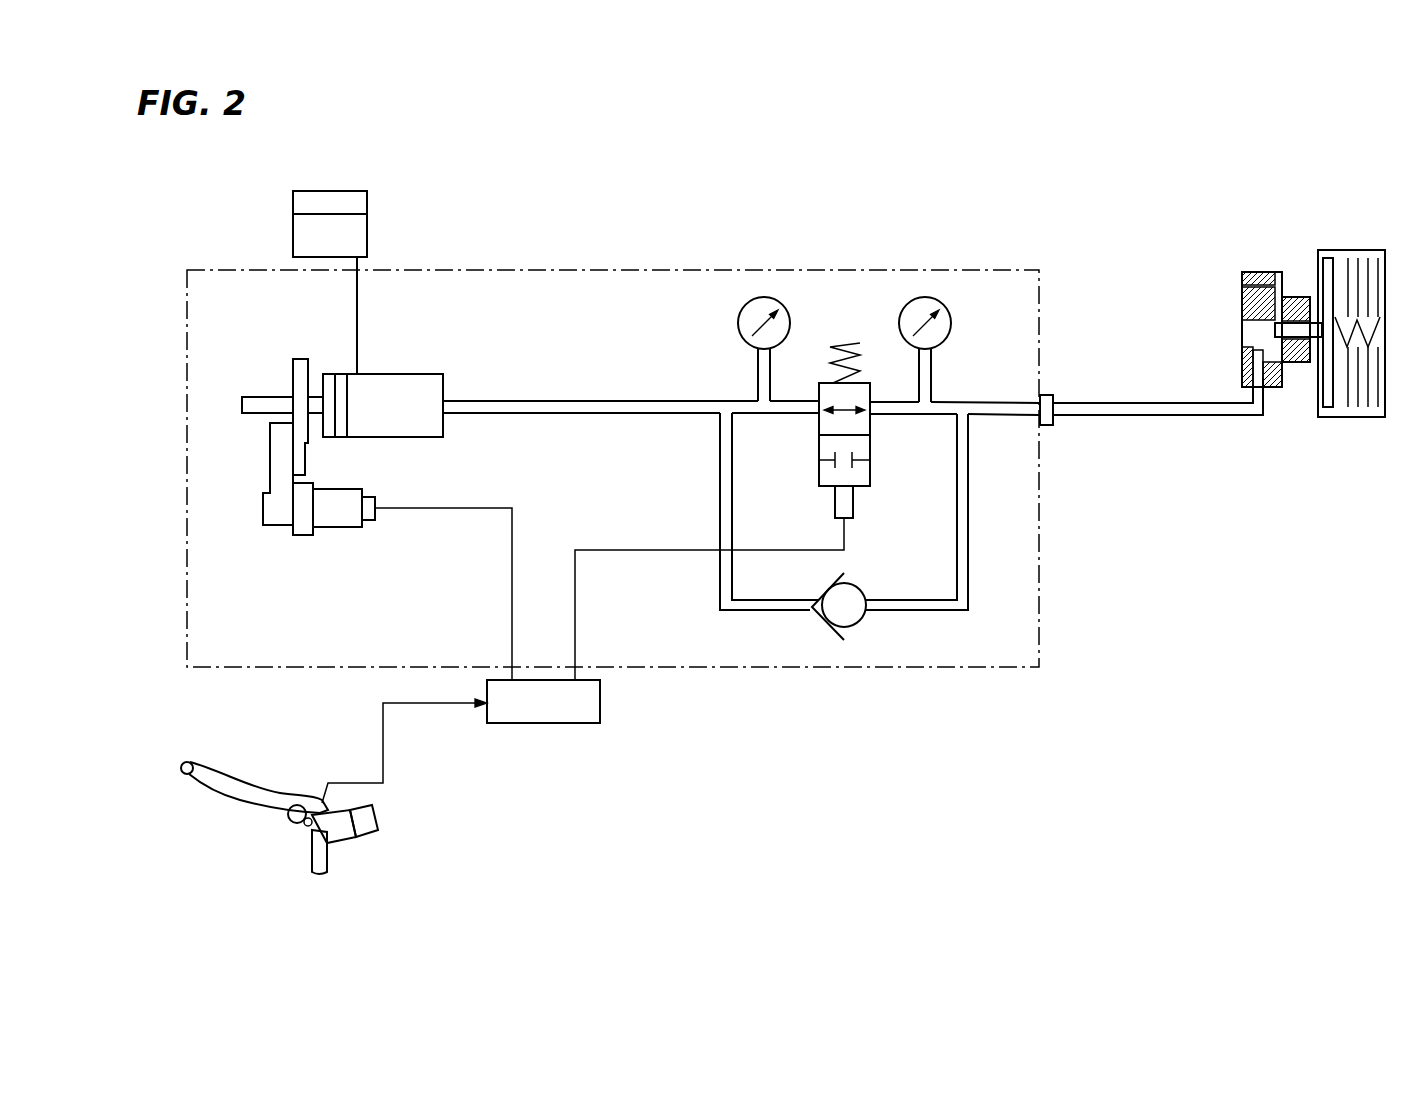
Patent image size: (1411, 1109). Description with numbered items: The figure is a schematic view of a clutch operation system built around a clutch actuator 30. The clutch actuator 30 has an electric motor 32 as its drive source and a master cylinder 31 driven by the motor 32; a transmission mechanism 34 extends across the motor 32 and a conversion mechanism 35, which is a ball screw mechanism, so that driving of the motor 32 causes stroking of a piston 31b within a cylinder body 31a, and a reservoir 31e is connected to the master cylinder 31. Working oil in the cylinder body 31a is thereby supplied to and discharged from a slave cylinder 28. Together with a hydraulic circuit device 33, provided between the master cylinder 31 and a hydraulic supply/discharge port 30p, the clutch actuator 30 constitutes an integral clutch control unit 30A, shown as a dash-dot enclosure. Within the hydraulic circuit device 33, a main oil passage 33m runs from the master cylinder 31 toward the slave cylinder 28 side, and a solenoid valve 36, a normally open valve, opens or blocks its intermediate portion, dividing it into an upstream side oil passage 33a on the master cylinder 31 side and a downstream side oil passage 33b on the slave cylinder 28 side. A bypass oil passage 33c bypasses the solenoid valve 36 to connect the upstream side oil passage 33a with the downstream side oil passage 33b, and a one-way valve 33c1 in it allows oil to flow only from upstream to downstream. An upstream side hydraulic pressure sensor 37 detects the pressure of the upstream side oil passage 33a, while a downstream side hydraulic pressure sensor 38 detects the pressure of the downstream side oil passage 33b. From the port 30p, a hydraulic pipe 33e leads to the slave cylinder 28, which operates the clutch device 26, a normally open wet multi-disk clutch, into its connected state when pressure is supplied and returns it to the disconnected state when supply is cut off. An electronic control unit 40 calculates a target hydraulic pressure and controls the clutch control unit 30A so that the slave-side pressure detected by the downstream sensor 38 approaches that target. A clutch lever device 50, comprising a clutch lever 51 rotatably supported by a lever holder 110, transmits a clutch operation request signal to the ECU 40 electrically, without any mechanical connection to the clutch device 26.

The clutch device 26 is at (1375, 246).
The slave cylinder 28 is at (1258, 273).
The clutch actuator 30 is at (650, 446).
The clutch control unit 30A is at (470, 270).
The hydraulic supply/discharge port 30p is at (1045, 427).
The master cylinder 31 is at (365, 312).
The cylinder body 31a is at (405, 373).
The piston 31b is at (348, 423).
The reservoir 31e is at (338, 190).
The electric motor 32 is at (333, 528).
The hydraulic circuit device 33 is at (741, 479).
The upstream side oil passage 33a is at (562, 400).
The downstream side oil passage 33b is at (977, 402).
The bypass oil passage 33c is at (844, 584).
The one-way valve 33c1 is at (859, 643).
The hydraulic pipe 33e is at (1122, 402).
The main oil passage 33m is at (741, 353).
The transmission mechanism 34 is at (275, 460).
The conversion mechanism 35 is at (298, 373).
The solenoid valve 36 is at (872, 488).
The upstream side hydraulic pressure sensor 37 is at (738, 317).
The downstream side hydraulic pressure sensor 38 is at (900, 317).
The electronic control unit 40 is at (538, 723).
The clutch lever device 50 is at (334, 807).
The clutch lever 51 is at (218, 787).
The lever holder 110 is at (337, 840).